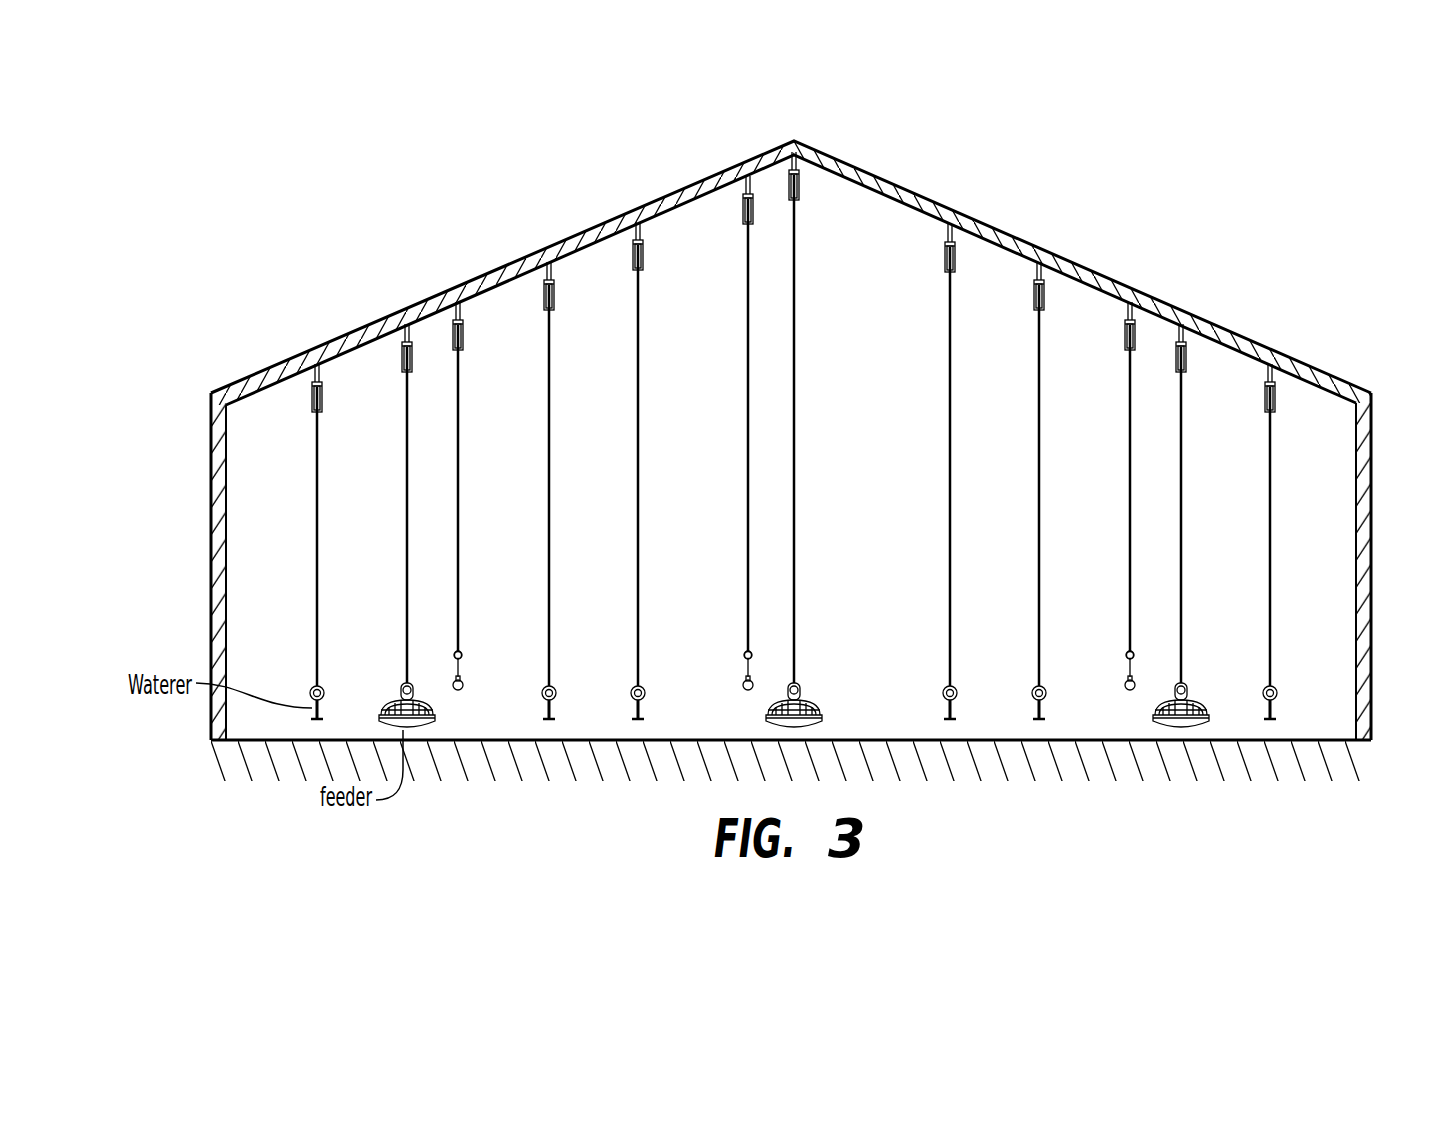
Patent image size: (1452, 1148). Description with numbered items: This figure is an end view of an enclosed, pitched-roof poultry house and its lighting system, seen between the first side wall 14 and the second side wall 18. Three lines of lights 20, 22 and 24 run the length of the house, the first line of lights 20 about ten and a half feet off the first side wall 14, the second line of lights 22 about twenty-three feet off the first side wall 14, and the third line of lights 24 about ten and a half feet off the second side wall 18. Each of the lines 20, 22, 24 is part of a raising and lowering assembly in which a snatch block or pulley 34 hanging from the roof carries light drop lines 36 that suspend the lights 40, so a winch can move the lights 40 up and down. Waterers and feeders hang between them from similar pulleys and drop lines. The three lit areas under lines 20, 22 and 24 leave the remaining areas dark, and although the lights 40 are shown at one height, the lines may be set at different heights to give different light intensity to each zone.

The first side wall 14 is at (211, 555).
The second side wall 18 is at (1372, 580).
The first line of lights 20 is at (470, 650).
The second line of lights 22 is at (742, 649).
The third line of lights 24 is at (1122, 647).
The snatch block or pulley 34 is at (466, 340).
The light drop lines 36 is at (461, 490).
The lights 40 is at (458, 690).